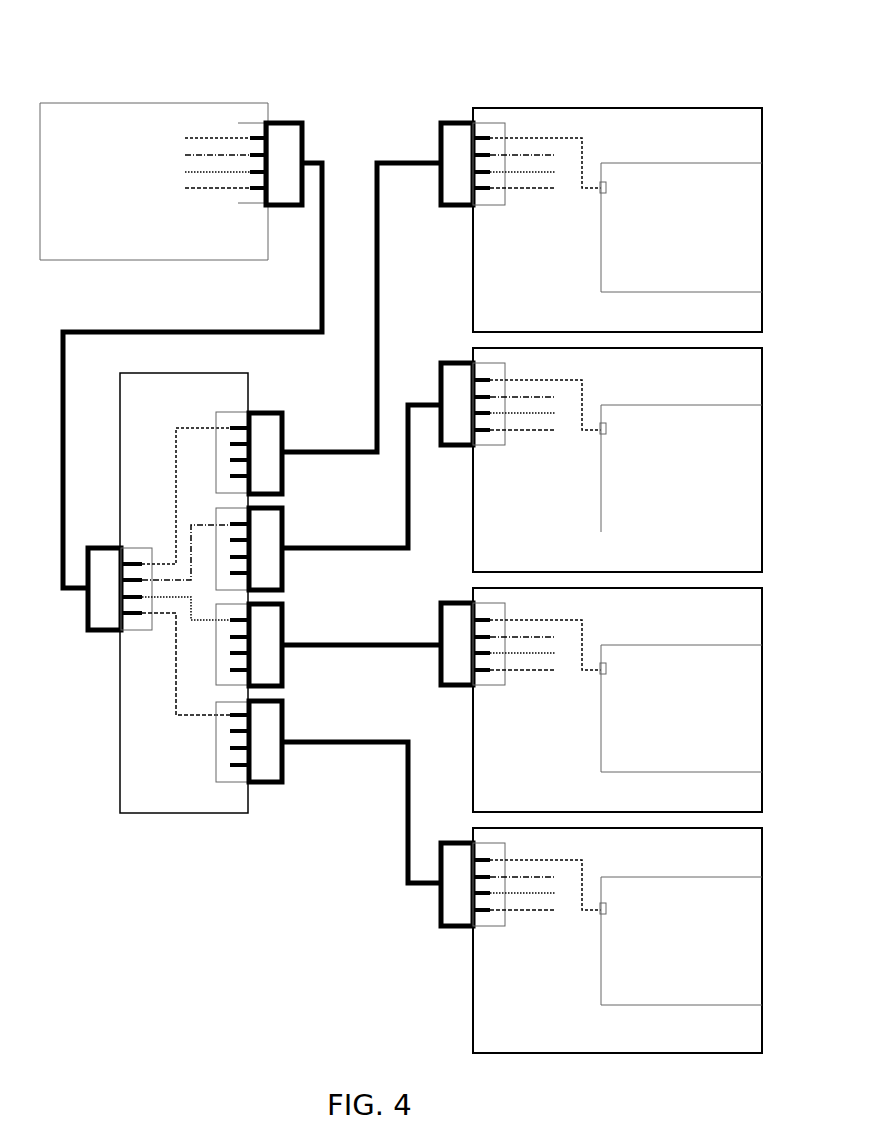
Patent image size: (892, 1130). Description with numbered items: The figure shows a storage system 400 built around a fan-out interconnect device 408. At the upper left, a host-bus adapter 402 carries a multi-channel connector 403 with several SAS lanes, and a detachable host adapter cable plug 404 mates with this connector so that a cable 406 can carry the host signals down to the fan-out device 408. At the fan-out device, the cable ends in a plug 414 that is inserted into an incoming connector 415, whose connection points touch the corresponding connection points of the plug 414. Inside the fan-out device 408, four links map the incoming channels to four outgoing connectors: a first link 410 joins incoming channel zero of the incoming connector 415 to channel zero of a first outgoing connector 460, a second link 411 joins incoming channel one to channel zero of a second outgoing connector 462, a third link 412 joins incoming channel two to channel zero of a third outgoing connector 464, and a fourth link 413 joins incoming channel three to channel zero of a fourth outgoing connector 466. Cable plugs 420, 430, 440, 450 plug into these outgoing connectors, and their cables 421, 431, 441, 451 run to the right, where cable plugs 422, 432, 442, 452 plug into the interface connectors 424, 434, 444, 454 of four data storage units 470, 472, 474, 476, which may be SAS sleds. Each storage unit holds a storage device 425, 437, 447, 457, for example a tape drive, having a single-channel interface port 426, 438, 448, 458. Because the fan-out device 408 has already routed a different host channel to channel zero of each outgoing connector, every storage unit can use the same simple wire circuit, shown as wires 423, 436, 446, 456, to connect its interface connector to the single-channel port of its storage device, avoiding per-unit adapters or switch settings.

The storage system 400 is at (236, 30).
The host-bus adapter 402 is at (97, 105).
The multi-channel connector 403 is at (255, 207).
The host adapter cable plug 404 is at (292, 125).
The cable 406 is at (117, 330).
The fan-out interconnect device 408 is at (172, 373).
The first link 410 is at (175, 488).
The second link 411 is at (191, 524).
The third link 412 is at (194, 622).
The fourth link 413 is at (175, 695).
The plug 414 is at (88, 603).
The incoming connector 415 is at (135, 547).
The cable plug 420 is at (268, 409).
The cable 421 is at (357, 443).
The cable plug 422 is at (440, 135).
The wires 423 is at (570, 138).
The interface connector 424 is at (492, 206).
The storage device 425 is at (661, 163).
The single-channel interface port 426 is at (607, 188).
The cable plug 430 is at (285, 536).
The cable 431 is at (387, 552).
The cable plug 432 is at (440, 385).
The interface connector 434 is at (492, 446).
The wires 436 is at (570, 378).
The storage device 437 is at (661, 403).
The single-channel interface port 438 is at (607, 428).
The cable plug 440 is at (285, 632).
The cable 441 is at (403, 649).
The cable plug 442 is at (440, 613).
The interface connector 444 is at (492, 686).
The wires 446 is at (570, 618).
The storage device 447 is at (667, 645).
The single-channel interface port 448 is at (607, 668).
The cable plug 450 is at (285, 728).
The cable 451 is at (385, 750).
The cable plug 452 is at (440, 910).
The interface connector 454 is at (492, 927).
The wires 456 is at (570, 858).
The storage device 457 is at (667, 877).
The single-channel interface port 458 is at (607, 908).
The first outgoing connector 460 is at (216, 418).
The second outgoing connector 462 is at (218, 509).
The third outgoing connector 464 is at (218, 655).
The fourth outgoing connector 466 is at (218, 755).
The data storage unit 470 is at (764, 130).
The data storage unit 472 is at (764, 370).
The data storage unit 474 is at (764, 610).
The data storage unit 476 is at (764, 850).